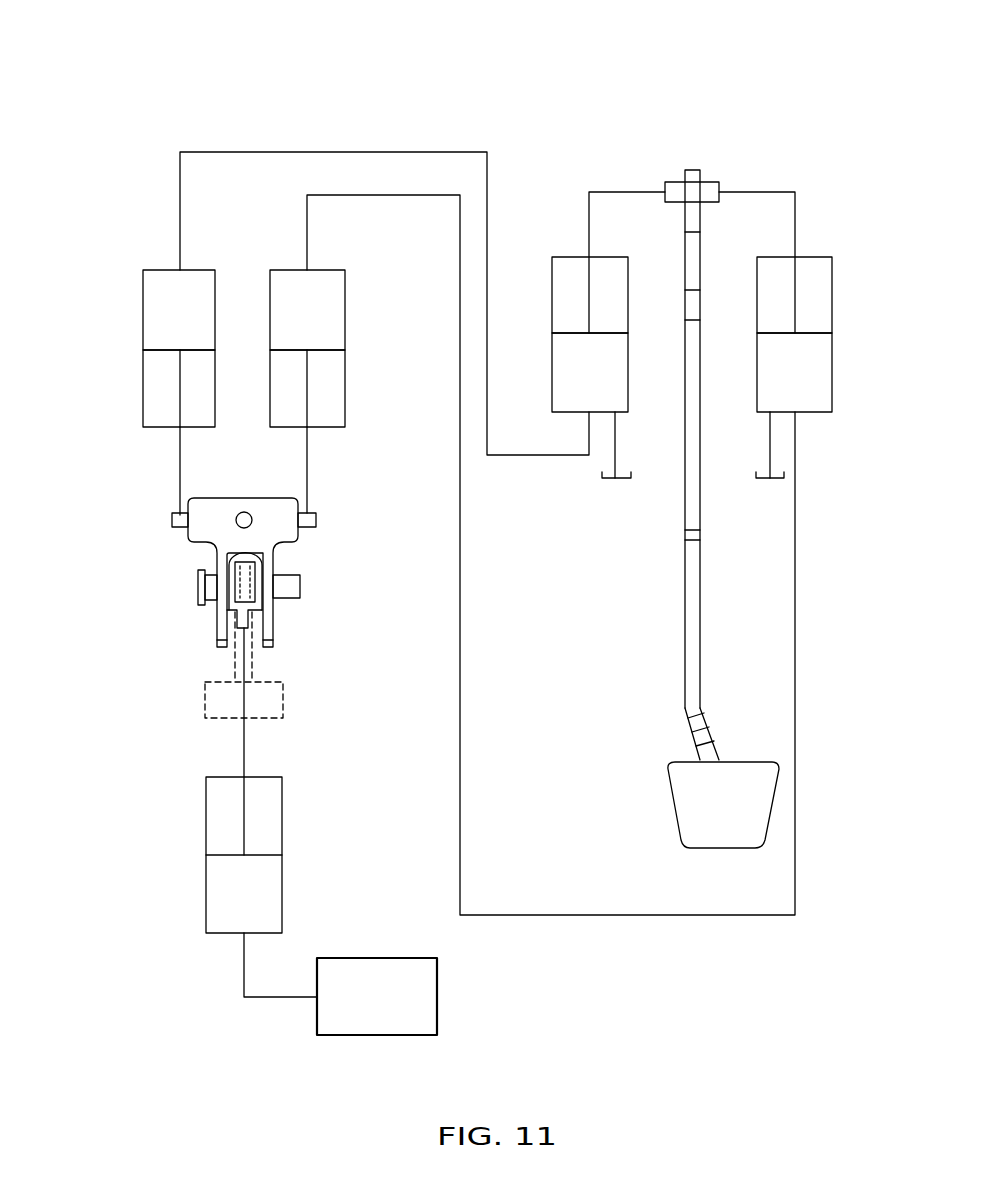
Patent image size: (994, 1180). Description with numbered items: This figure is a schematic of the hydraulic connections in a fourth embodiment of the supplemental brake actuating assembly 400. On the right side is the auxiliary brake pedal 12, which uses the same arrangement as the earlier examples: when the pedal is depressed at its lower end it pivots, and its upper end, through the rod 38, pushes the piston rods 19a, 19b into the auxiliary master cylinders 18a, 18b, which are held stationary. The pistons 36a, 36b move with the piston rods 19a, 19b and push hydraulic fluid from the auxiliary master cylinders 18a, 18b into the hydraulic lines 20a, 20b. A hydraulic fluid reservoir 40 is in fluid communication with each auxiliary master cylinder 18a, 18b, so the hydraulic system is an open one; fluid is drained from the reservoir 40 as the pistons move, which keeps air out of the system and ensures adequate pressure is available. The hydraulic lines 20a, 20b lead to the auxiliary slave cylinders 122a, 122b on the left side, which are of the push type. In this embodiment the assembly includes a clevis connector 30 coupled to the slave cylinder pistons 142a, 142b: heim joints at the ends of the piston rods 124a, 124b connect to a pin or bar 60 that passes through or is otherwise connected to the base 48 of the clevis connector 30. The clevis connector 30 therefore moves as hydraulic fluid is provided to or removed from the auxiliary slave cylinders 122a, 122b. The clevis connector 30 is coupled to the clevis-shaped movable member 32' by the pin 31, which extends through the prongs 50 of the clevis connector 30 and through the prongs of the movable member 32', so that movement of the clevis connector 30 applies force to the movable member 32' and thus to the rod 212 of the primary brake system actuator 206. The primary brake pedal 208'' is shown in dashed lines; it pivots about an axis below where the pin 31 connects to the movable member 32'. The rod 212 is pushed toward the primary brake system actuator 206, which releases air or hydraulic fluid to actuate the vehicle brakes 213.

The supplemental brake actuating assembly 400 is at (556, 60).
The piston of auxiliary slave cylinder 142b is at (200, 347).
The piston of auxiliary slave cylinder 142a is at (327, 347).
The auxiliary slave cylinder 122b is at (132, 348).
The auxiliary slave cylinder 122a is at (352, 348).
The piston rod 124b is at (180, 470).
The piston rod 124a is at (308, 472).
The base 48 is at (279, 542).
The pin or bar 60 is at (316, 520).
The clevis connector 30 is at (251, 602).
The pin 31 is at (203, 585).
The movable member 32' is at (298, 582).
The prongs 50 is at (265, 612).
The primary brake pedal 208'' is at (296, 665).
The rod 212 is at (244, 743).
The primary brake system actuator 206 is at (282, 895).
The vehicle brakes 213 is at (437, 1002).
The hydraulic line 20a is at (460, 728).
The hydraulic line 20b is at (537, 457).
The rod 38 is at (712, 182).
The piston rod 19a is at (795, 228).
The piston rod 19b is at (589, 222).
The auxiliary master cylinder 18a is at (772, 317).
The auxiliary master cylinder 18b is at (565, 334).
The piston 36a is at (775, 335).
The piston 36b is at (570, 335).
The hydraulic fluid reservoir 40 is at (610, 483).
The auxiliary brake pedal 12 is at (693, 637).